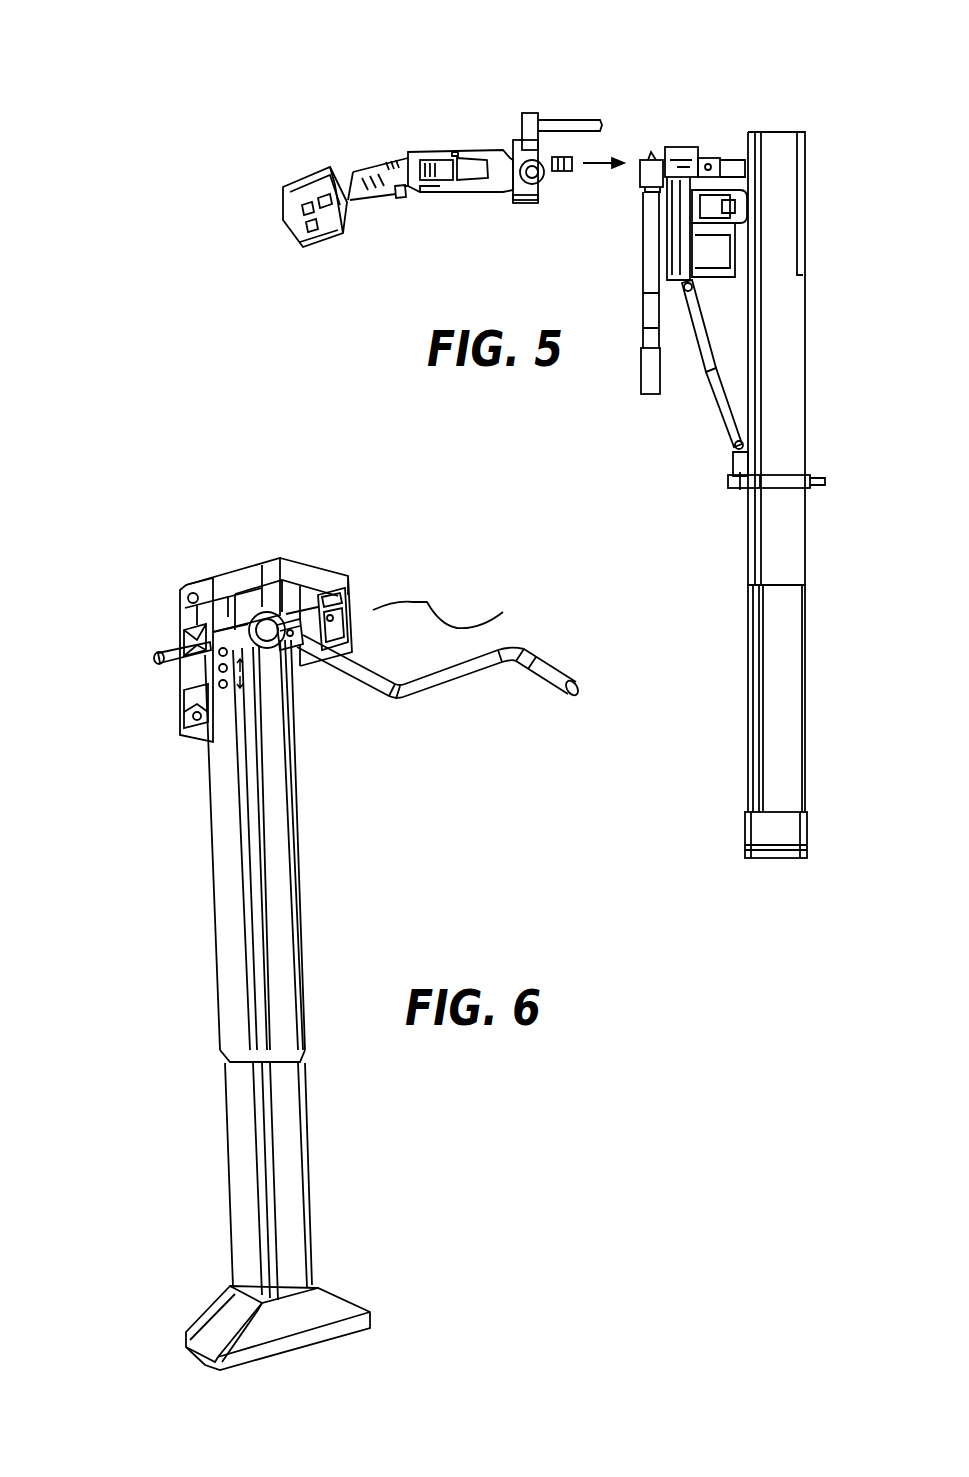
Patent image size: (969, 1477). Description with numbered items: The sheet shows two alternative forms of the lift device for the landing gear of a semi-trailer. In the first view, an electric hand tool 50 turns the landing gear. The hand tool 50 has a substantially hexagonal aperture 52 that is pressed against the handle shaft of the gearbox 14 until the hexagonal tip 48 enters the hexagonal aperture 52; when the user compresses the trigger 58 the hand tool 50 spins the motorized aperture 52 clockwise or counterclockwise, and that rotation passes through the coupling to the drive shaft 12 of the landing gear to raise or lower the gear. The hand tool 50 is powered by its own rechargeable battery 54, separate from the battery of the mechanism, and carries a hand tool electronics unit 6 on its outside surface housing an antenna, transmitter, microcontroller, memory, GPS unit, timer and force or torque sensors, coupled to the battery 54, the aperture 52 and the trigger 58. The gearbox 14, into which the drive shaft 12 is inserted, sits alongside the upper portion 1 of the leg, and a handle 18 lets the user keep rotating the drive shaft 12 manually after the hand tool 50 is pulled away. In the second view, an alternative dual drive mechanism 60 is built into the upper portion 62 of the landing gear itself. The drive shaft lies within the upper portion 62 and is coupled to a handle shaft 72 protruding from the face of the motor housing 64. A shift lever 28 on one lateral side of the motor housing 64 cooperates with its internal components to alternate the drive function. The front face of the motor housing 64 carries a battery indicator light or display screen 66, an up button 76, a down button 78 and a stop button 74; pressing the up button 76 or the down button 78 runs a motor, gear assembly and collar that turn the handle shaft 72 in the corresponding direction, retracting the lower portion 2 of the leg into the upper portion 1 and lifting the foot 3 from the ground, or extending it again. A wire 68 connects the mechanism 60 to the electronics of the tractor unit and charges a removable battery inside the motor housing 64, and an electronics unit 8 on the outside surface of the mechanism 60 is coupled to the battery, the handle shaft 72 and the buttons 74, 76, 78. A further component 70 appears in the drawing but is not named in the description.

In FIG. 5, the upper portion of the leg 1 is at (780, 410).
In FIG. 5, the lower portion of the leg 2 is at (787, 703).
In FIG. 6, the lower portion of the leg 2 is at (303, 1148).
In FIG. 6, the foot 3 is at (338, 1313).
In FIG. 5, the hand tool electronics unit 6 is at (498, 157).
In FIG. 5, the electronics unit 8 is at (742, 203).
In FIG. 6, the electronics unit 8 is at (337, 600).
In FIG. 5, the drive shaft 12 is at (725, 165).
In FIG. 5, the gearbox 14 is at (680, 172).
In FIG. 5, the handle 18 is at (643, 372).
In FIG. 6, the handle 18 is at (505, 668).
In FIG. 6, the shift lever 28 is at (158, 652).
In FIG. 5, the hexagonal tip 48 is at (638, 163).
In FIG. 5, the electric hand tool 50 is at (372, 165).
In FIG. 5, the hexagonal aperture 52 is at (572, 170).
In FIG. 5, the rechargeable battery 54 is at (283, 190).
In FIG. 5, the trigger 58 is at (399, 198).
In FIG. 6, the dual drive mechanism 60 is at (122, 552).
In FIG. 6, the upper portion of the landing gear 62 is at (280, 838).
In FIG. 6, the motor housing 64 is at (312, 583).
In FIG. 6, the battery indicator light 66 is at (350, 592).
In FIG. 6, the wire 68 is at (427, 602).
In FIG. 6, the mounting bracket 70 is at (298, 590).
In FIG. 6, the handle shaft 72 is at (268, 648).
In FIG. 6, the stop button 74 is at (213, 642).
In FIG. 6, the up button 76 is at (220, 656).
In FIG. 6, the down button 78 is at (202, 712).